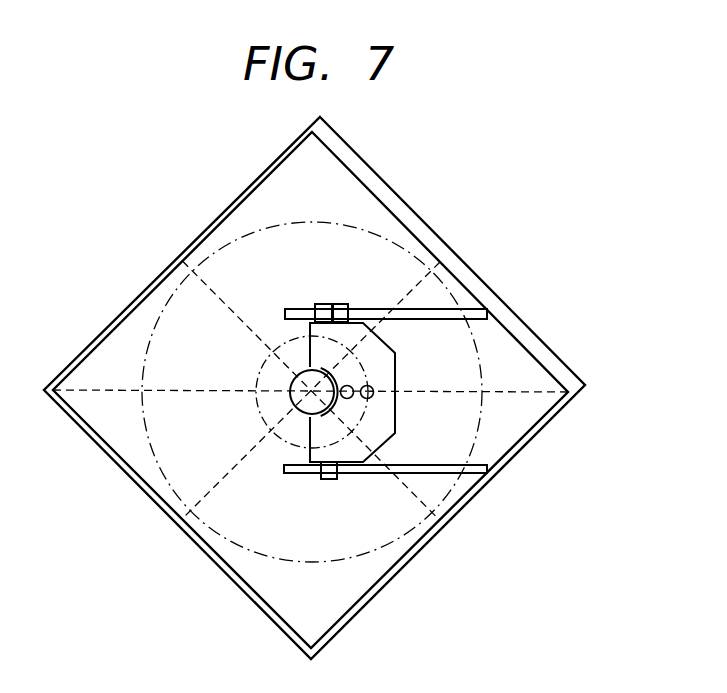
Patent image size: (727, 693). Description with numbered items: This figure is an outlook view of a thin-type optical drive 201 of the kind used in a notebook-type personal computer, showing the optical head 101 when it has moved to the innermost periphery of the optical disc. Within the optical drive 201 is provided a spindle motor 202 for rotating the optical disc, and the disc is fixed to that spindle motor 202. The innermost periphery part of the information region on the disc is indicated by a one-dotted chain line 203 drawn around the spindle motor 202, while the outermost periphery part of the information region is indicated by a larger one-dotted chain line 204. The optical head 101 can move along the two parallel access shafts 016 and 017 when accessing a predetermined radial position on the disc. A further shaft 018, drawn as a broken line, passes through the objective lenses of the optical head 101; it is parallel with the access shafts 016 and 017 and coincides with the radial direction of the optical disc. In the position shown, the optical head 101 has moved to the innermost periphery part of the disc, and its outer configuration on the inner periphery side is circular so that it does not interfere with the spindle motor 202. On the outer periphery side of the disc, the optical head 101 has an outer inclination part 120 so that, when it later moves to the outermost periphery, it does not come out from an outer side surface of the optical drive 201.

The optical drive 201 is at (402, 199).
The one-dotted chain line 204 is at (253, 227).
The one-dotted chain line 203 is at (290, 338).
The spindle motor 202 is at (290, 381).
The optical head 101 is at (390, 365).
The outer inclination part 120 is at (390, 438).
The access shaft 016 is at (367, 307).
The access shaft 017 is at (293, 475).
The shaft 018 is at (202, 393).